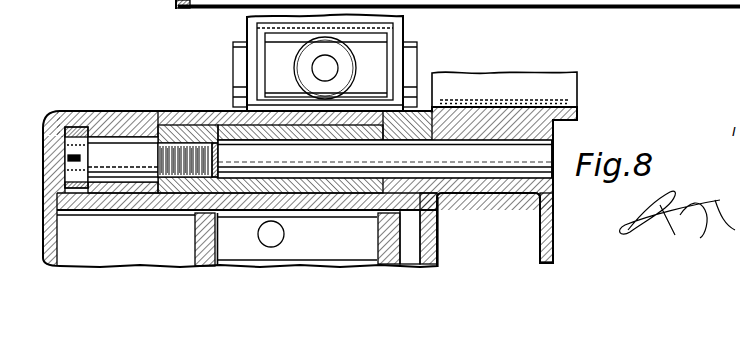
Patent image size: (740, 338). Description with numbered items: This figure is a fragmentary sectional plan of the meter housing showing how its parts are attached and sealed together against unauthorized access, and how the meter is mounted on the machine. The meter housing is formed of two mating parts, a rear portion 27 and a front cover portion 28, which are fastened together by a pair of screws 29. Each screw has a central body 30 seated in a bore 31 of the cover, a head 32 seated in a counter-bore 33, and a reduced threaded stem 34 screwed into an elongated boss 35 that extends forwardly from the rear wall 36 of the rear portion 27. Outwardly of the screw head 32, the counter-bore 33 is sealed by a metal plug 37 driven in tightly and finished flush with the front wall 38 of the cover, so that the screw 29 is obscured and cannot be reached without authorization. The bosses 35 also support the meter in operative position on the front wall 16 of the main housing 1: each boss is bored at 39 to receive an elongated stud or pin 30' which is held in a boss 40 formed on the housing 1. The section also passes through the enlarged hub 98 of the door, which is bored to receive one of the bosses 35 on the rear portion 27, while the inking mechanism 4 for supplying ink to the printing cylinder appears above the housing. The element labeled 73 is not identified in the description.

The main housing 1 is at (553, 81).
The inking mechanism 4 is at (418, 44).
The front wall 16 is at (543, 249).
The rear portion 27 is at (432, 107).
The front cover portion 28 is at (157, 114).
The screw 29 is at (112, 154).
The central body 30 is at (123, 211).
The stud or pin 30' is at (589, 123).
The bore 31 is at (147, 182).
The head 32 is at (65, 127).
The counter-bore 33 is at (73, 128).
The reduced threaded stem 34 is at (190, 146).
The elongated boss 35 is at (218, 140).
The rear wall 36 is at (432, 228).
The metal plug 37 is at (58, 212).
The front wall 38 is at (58, 257).
The bore 39 is at (284, 150).
The boss 40 is at (512, 196).
The opening 73 is at (233, 228).
The hub 98 is at (232, 110).